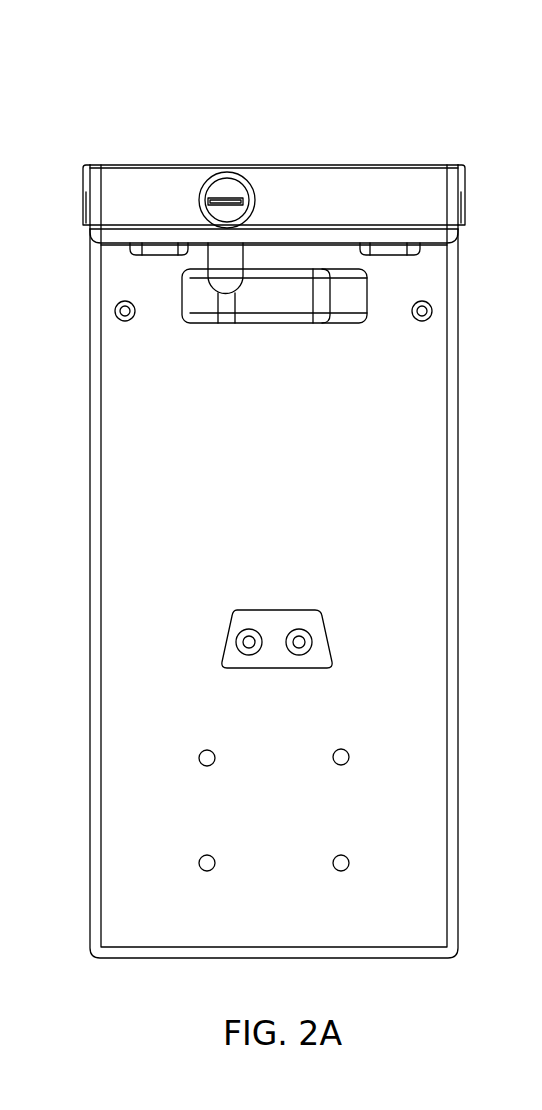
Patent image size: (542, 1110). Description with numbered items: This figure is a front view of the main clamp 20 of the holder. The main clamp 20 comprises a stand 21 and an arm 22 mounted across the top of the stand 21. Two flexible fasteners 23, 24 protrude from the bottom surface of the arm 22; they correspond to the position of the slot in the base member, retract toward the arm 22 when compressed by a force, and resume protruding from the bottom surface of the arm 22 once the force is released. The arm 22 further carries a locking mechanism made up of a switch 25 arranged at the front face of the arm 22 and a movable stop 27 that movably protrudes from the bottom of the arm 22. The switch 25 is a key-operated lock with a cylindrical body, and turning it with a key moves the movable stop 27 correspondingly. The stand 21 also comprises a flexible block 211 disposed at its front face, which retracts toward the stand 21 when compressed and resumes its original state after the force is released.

The main clamp 20 is at (446, 113).
The stand 21 is at (412, 455).
The arm 22 is at (157, 182).
The flexible fastener 23 is at (153, 252).
The flexible fastener 24 is at (390, 250).
The switch 25 is at (234, 190).
The movable stop 27 is at (220, 280).
The flexible block 211 is at (348, 303).